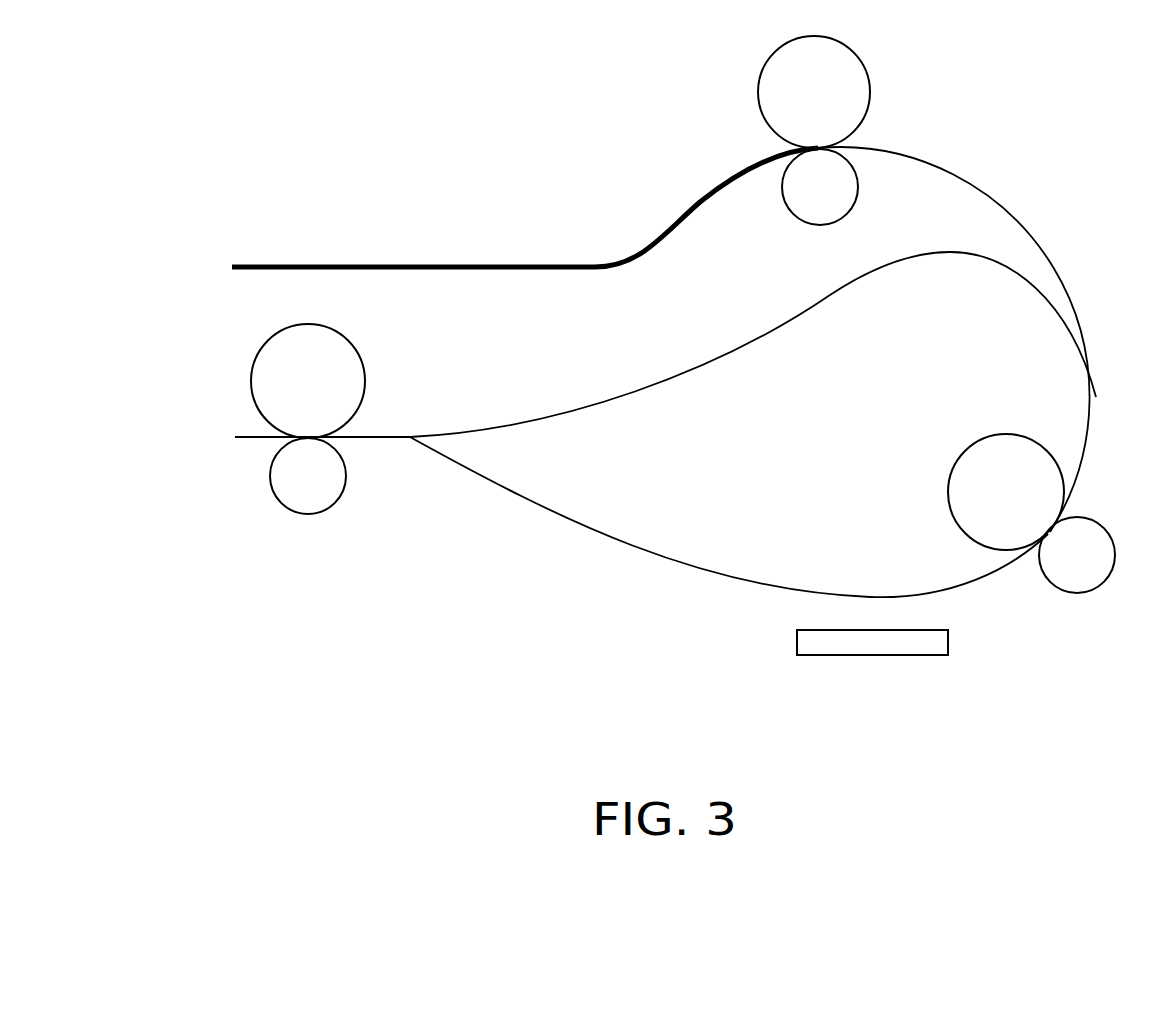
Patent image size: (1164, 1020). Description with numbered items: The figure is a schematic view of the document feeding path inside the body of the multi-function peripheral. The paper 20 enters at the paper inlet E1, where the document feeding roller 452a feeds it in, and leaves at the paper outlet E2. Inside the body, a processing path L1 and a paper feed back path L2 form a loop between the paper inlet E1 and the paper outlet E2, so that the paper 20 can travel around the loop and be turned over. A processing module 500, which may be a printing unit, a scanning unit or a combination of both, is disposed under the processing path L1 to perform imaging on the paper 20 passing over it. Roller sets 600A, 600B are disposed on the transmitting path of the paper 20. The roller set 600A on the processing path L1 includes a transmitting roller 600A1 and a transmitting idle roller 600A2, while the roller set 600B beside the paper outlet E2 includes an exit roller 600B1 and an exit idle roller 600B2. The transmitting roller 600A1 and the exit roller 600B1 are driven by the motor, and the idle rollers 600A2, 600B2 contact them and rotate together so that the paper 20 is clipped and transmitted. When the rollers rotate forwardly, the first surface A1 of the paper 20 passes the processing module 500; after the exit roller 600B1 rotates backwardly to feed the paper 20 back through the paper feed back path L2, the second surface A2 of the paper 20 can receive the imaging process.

The paper 20 is at (525, 213).
The first surface A1 is at (497, 265).
The second surface A2 is at (452, 270).
The paper inlet E1 is at (570, 172).
The paper outlet E2 is at (228, 512).
The document feeding roller 452a is at (852, 70).
The processing path L1 is at (685, 563).
The paper feed back path L2 is at (578, 424).
The processing module 500 is at (868, 647).
The roller set 600A is at (1051, 578).
The transmitting roller 600A1 is at (998, 518).
The transmitting idle roller 600A2 is at (1092, 563).
The roller set 600B is at (347, 478).
The exit roller 600B1 is at (335, 395).
The exit idle roller 600B2 is at (310, 509).